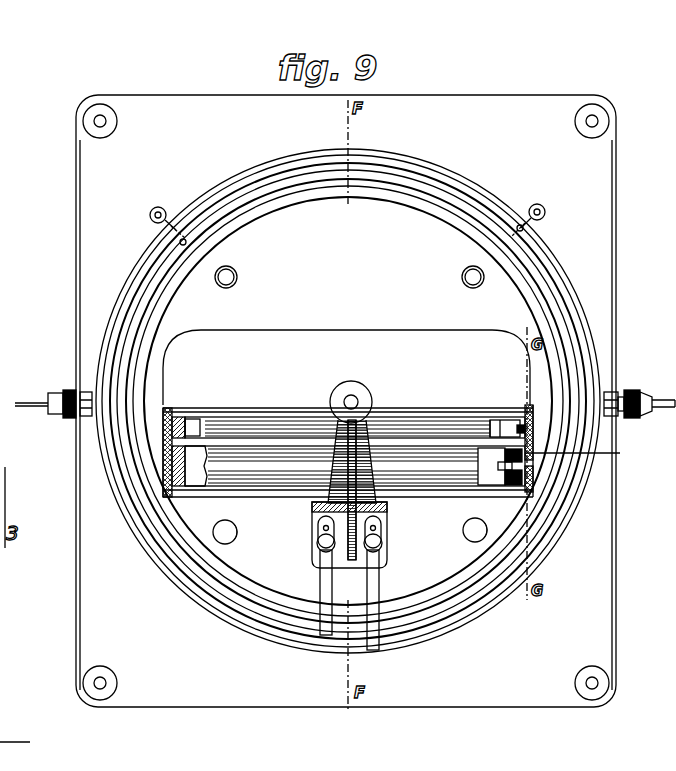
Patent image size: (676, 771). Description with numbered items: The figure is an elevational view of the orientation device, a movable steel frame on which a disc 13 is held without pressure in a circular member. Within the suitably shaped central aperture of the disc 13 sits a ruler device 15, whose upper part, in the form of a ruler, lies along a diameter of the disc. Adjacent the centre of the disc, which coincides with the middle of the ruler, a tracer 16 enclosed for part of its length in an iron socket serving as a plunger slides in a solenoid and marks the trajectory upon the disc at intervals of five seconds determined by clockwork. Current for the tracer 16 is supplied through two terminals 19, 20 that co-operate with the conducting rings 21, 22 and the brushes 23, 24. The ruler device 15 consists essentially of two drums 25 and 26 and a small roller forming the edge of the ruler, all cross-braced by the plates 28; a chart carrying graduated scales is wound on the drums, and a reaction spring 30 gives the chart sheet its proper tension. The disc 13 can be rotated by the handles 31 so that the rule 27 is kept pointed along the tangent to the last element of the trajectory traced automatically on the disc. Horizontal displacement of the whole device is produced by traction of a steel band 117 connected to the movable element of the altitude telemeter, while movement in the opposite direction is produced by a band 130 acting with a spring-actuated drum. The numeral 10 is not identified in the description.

The mounting plate 10 is at (512, 106).
The disc 13 is at (383, 208).
The ruler device 15 is at (488, 492).
The tracer 16 is at (354, 398).
The terminal 19 is at (546, 209).
The terminal 20 is at (150, 212).
The conducting ring 21 is at (543, 257).
The conducting ring 22 is at (165, 275).
The brush 23 is at (412, 590).
The brush 24 is at (327, 590).
The drum 25 is at (487, 420).
The drum 26 is at (479, 450).
The rule 27 is at (443, 413).
The plate 28 is at (165, 492).
The reaction spring 30 is at (586, 451).
The handle 31 is at (226, 534).
The steel band 117 is at (40, 389).
The band 130 is at (673, 402).